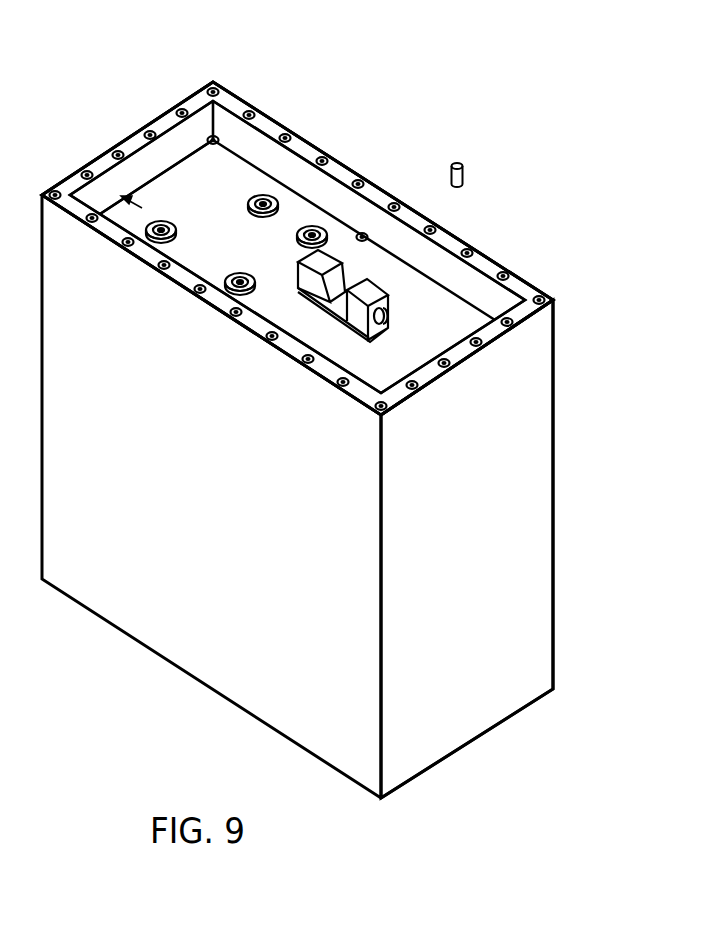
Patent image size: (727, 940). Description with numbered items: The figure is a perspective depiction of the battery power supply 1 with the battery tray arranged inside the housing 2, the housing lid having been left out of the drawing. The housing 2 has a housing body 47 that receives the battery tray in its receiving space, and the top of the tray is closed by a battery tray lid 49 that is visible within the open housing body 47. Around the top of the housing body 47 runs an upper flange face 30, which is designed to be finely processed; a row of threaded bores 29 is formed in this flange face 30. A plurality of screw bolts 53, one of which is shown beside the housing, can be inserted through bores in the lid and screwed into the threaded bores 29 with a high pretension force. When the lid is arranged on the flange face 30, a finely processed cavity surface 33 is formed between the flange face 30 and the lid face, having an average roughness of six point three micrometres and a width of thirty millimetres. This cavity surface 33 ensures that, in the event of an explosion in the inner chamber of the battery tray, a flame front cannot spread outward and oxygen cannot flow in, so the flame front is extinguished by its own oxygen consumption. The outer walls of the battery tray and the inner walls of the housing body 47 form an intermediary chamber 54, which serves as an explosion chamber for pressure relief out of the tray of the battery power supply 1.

The battery power supply 1 is at (520, 222).
The housing 2 is at (580, 348).
The threaded bores 29 is at (323, 162).
The upper flange face 30 is at (160, 127).
The cavity surface 33 is at (265, 94).
The housing body 47 is at (496, 703).
The battery tray lid 49 is at (473, 320).
The screw bolts 53 is at (451, 178).
The intermediary chamber 54 is at (106, 188).